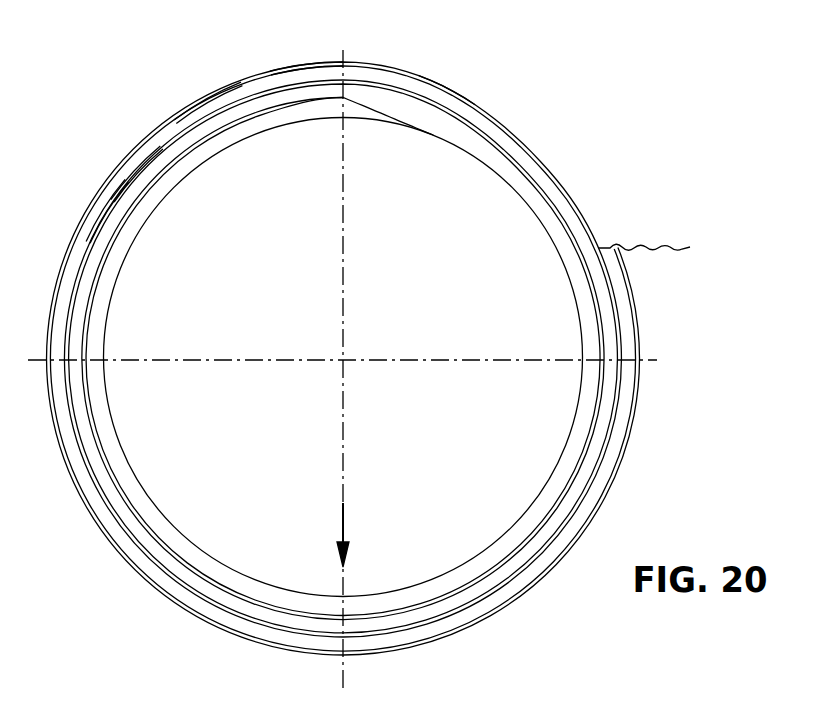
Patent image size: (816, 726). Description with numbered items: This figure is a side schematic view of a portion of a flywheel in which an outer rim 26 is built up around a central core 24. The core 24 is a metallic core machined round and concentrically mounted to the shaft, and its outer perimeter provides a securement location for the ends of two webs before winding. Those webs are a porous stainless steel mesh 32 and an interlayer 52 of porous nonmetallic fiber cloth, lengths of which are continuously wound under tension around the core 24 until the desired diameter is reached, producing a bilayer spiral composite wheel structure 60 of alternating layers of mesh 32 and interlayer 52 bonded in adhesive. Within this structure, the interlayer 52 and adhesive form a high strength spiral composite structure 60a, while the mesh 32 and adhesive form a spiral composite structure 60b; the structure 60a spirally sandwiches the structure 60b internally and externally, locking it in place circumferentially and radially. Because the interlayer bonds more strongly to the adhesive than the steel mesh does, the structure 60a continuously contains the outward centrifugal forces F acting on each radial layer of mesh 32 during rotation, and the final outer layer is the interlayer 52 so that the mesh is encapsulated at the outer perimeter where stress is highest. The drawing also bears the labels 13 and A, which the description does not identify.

The clamp ring assembly 13 is at (473, 316).
The core 24 is at (503, 200).
The outer rim 26 is at (204, 97).
The mesh 32 is at (298, 78).
The interlayer 52 is at (453, 92).
The bilayer spiral composite wheel structure 60 is at (160, 125).
The spiral composite structure 60a is at (135, 177).
The spiral composite structure 60b is at (105, 202).
The central axis A is at (343, 360).
The centrifugal forces F is at (343, 503).